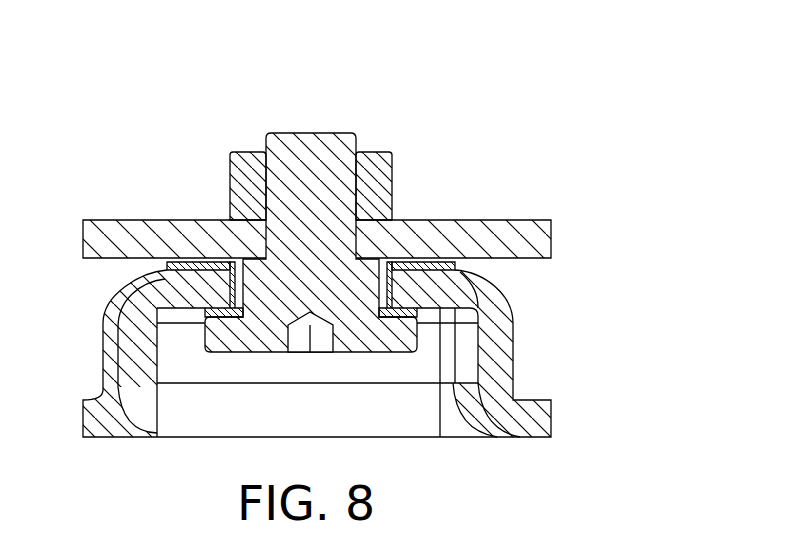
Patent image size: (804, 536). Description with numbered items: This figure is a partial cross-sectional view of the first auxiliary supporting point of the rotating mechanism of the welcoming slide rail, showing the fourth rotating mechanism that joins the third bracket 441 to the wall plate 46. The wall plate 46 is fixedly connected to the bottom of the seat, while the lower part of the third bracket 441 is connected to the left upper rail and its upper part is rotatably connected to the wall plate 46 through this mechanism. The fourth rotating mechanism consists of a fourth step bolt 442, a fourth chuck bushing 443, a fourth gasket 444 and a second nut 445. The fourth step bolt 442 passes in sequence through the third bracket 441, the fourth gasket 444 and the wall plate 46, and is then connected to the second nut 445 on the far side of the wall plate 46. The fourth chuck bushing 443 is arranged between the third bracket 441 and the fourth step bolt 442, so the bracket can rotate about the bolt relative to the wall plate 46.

The wall plate 46 is at (138, 233).
The third bracket 441 is at (510, 340).
The fourth step bolt 442 is at (332, 150).
The fourth chuck bushing 443 is at (230, 262).
The fourth gasket 444 is at (433, 262).
The second nut 445 is at (243, 162).